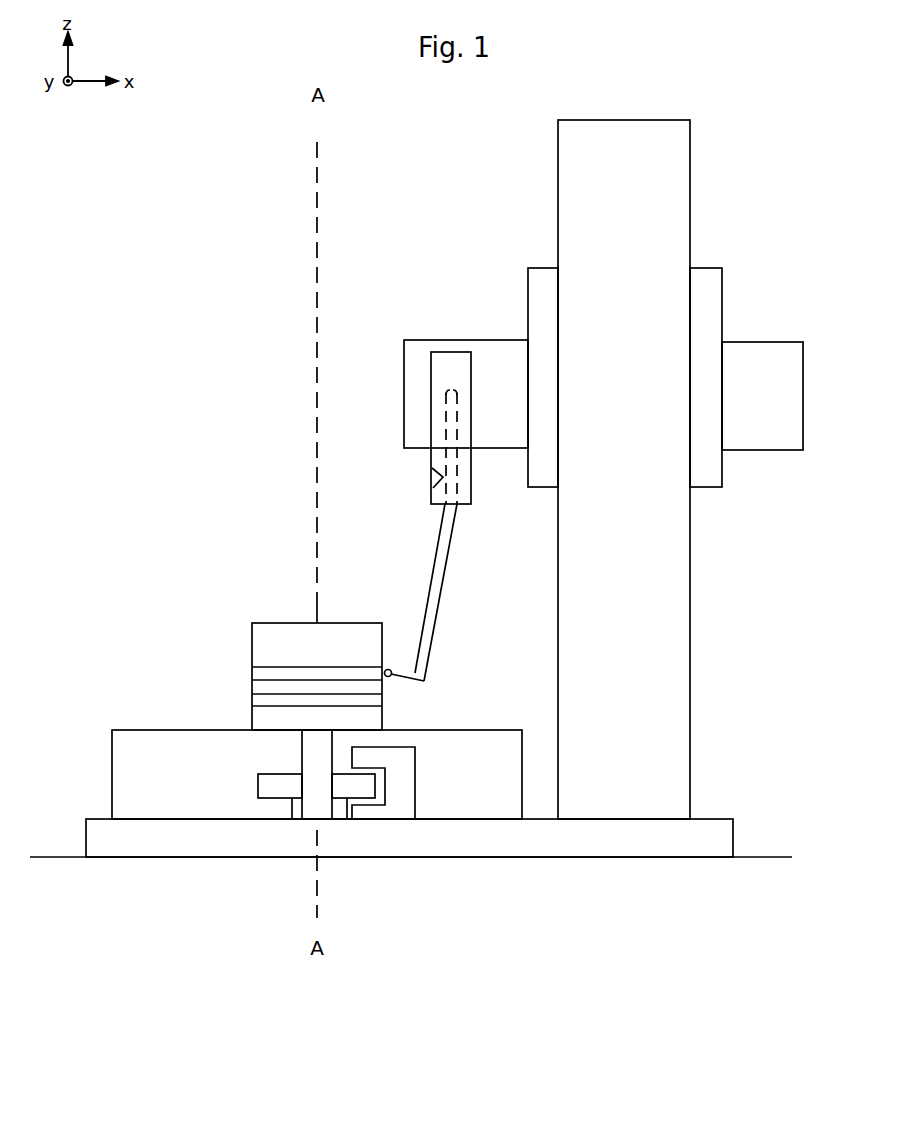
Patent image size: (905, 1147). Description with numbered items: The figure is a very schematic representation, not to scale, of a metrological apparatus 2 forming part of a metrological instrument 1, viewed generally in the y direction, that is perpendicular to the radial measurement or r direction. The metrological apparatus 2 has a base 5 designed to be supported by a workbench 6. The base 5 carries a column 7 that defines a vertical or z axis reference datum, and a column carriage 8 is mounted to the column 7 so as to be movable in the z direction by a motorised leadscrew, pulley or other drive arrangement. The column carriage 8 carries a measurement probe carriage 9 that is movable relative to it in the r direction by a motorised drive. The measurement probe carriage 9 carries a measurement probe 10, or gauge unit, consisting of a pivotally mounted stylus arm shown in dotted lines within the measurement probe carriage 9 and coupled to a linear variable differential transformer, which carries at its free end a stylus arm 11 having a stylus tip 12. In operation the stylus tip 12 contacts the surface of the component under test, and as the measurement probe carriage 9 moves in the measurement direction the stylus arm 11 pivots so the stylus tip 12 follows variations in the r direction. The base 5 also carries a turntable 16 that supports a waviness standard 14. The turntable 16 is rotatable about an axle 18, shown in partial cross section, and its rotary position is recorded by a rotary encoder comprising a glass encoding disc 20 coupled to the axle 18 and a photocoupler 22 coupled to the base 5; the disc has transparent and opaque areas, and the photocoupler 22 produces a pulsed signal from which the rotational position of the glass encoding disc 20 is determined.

The metrological instrument 1 is at (119, 209).
The metrological apparatus 2 is at (126, 549).
The base 5 is at (601, 842).
The workbench 6 is at (92, 903).
The column 7 is at (558, 172).
The column carriage 8 is at (528, 290).
The measurement probe carriage 9 is at (404, 358).
The measurement probe 10 is at (431, 372).
The stylus arm 11 is at (447, 550).
The stylus tip 12 is at (402, 681).
The waviness standard 14 is at (252, 633).
The turntable 16 is at (108, 730).
The axle 18 is at (325, 821).
The glass encoding disc 20 is at (293, 821).
The photocoupler 22 is at (401, 821).